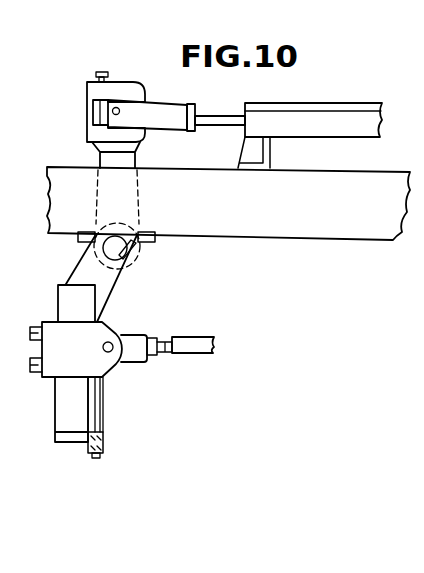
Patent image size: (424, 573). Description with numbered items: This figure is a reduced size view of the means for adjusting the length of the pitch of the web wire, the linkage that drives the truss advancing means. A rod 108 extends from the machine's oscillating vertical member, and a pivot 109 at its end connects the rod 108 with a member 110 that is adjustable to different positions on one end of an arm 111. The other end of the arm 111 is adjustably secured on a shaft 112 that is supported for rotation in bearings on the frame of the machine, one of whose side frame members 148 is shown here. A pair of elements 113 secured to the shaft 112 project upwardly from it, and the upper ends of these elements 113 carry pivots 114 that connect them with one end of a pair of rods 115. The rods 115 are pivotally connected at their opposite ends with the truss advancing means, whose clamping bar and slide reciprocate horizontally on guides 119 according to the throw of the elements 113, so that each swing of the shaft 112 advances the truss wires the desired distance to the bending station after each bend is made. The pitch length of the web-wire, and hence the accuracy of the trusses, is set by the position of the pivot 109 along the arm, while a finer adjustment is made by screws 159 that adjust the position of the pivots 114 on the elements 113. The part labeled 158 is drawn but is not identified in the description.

The screws 159 is at (118, 53).
The pivots 114 is at (112, 110).
The rods 115 is at (212, 120).
The guides 119 is at (343, 120).
The elements 113 is at (143, 187).
The shaft 112 is at (115, 248).
The side frame member 148 is at (318, 231).
The pivot 109 is at (111, 344).
The rod 108 is at (203, 341).
The member 110 is at (110, 363).
The arm 111 is at (63, 403).
The guide rod 158 is at (98, 407).